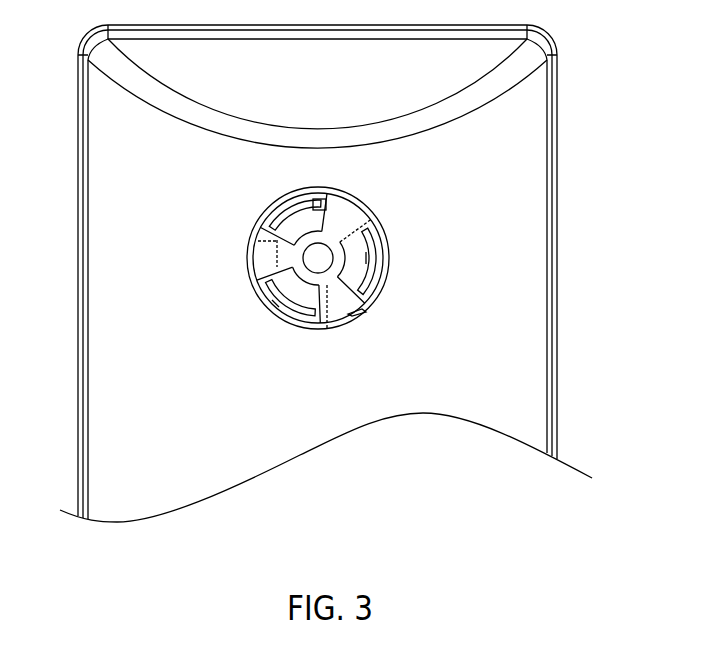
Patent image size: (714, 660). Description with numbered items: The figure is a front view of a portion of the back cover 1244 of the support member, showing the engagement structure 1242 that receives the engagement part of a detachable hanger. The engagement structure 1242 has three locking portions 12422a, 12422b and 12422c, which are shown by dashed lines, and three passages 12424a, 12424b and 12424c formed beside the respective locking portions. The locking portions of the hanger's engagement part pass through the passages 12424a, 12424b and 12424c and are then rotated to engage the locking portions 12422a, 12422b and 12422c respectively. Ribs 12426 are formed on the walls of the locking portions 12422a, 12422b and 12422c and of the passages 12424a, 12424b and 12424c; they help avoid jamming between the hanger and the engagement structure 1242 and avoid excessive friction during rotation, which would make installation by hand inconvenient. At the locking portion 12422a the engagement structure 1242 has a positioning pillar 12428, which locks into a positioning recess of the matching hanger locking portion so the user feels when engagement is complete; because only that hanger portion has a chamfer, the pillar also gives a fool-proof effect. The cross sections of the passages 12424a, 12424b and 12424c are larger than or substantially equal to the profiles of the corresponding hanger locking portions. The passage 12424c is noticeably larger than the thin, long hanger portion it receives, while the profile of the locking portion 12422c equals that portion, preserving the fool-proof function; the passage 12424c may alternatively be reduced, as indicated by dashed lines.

The back cover 1244 is at (530, 112).
The engagement structure 1242 is at (379, 214).
The locking portion 12422a is at (333, 331).
The locking portion 12422b is at (357, 197).
The locking portion 12422c is at (248, 249).
The passage 12424a is at (376, 266).
The passage 12424b is at (270, 208).
The passage 12424c is at (303, 312).
The ribs 12426 is at (311, 206).
The positioning pillar 12428 is at (370, 312).